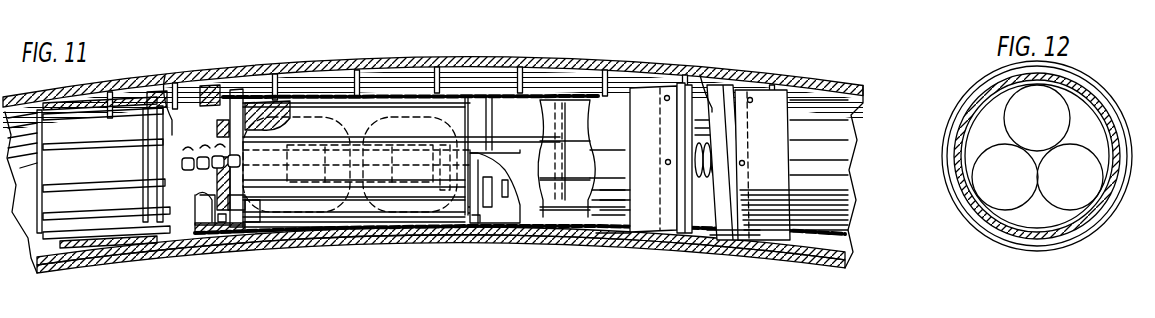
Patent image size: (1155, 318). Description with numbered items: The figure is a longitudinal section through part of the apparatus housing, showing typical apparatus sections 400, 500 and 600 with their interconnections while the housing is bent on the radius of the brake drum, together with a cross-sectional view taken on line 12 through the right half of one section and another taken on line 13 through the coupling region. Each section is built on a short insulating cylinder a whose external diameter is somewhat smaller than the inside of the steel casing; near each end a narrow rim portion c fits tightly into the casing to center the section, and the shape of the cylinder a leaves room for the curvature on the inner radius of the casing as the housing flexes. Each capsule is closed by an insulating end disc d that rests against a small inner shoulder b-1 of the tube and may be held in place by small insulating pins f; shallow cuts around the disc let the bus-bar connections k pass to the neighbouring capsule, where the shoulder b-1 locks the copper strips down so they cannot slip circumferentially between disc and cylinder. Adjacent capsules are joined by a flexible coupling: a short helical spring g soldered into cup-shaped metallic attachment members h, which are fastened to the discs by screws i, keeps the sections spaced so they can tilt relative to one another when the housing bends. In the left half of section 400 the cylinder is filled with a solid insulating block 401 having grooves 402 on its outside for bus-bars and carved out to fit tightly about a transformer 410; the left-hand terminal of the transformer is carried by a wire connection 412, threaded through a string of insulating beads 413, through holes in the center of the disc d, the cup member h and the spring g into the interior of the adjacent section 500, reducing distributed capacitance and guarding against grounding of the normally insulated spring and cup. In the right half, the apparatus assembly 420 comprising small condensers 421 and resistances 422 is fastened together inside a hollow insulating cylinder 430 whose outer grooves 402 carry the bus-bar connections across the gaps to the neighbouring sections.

In FIG. 11, the section line 12— 12 is at (652, 67).
In FIG. 11, the section line 13— 13 is at (192, 64).
In FIG. 11, the apparatus section 400 is at (362, 203).
In FIG. 11, the solid insulating cylinder 401 is at (461, 200).
In FIG. 12, the grooves 402 is at (963, 183).
In FIG. 11, the transformer 410 is at (330, 195).
In FIG. 11, the wire connection 412 is at (252, 238).
In FIG. 11, the insulating beads 413 is at (224, 178).
In FIG. 11, the pressure sleeve 420 is at (533, 203).
In FIG. 12, the pressure sleeve 420 is at (1000, 208).
In FIG. 11, the condensers 421 is at (503, 178).
In FIG. 11, the resistances 422 is at (568, 123).
In FIG. 12, the resistances 422 is at (1073, 207).
In FIG. 11, the hollow insulating cylinder 430 is at (565, 217).
In FIG. 11, the apparatus section 500 is at (115, 211).
In FIG. 11, the apparatus section 600 is at (823, 232).
In FIG. 11, the cylinder a is at (286, 240).
In FIG. 12, the cylinder a is at (970, 213).
In FIG. 11, the inner shoulder b-1 is at (240, 95).
In FIG. 11, the rim portion c is at (210, 240).
In FIG. 11, the end disc d is at (222, 242).
In FIG. 11, the pins f is at (732, 225).
In FIG. 11, the helical spring g is at (192, 172).
In FIG. 11, the cup-shaped attachment member h is at (238, 100).
In FIG. 11, the screws i is at (209, 86).